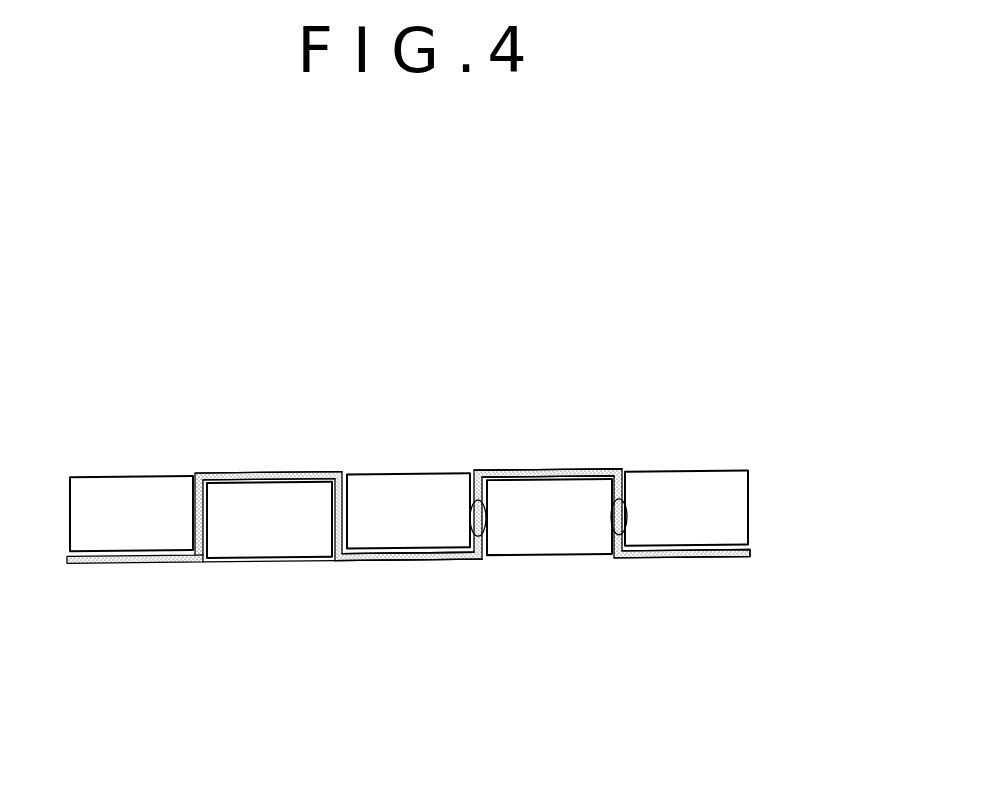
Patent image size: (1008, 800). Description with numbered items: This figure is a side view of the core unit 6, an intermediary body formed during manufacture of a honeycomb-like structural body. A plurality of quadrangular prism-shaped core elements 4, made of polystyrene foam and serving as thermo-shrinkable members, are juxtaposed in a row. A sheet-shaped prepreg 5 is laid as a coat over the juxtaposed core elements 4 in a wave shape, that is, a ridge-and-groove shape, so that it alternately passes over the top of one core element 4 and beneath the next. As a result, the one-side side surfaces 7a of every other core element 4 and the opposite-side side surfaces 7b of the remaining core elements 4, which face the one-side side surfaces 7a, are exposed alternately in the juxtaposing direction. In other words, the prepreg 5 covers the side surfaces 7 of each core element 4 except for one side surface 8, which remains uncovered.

The core element 4 is at (133, 472).
The prepreg 5 is at (680, 557).
The core unit 6 is at (678, 350).
The side surface 7 is at (475, 500).
The one-side side surface 7a is at (268, 560).
The opposite-side side surface 7b is at (235, 473).
The side surface 8 is at (478, 515).